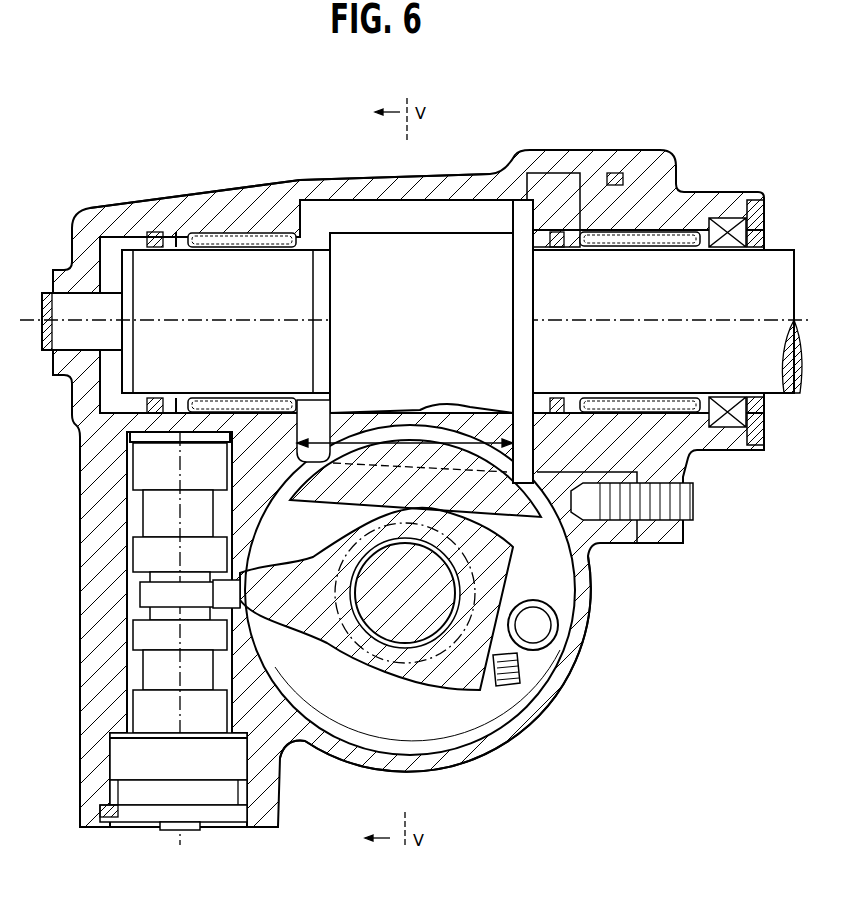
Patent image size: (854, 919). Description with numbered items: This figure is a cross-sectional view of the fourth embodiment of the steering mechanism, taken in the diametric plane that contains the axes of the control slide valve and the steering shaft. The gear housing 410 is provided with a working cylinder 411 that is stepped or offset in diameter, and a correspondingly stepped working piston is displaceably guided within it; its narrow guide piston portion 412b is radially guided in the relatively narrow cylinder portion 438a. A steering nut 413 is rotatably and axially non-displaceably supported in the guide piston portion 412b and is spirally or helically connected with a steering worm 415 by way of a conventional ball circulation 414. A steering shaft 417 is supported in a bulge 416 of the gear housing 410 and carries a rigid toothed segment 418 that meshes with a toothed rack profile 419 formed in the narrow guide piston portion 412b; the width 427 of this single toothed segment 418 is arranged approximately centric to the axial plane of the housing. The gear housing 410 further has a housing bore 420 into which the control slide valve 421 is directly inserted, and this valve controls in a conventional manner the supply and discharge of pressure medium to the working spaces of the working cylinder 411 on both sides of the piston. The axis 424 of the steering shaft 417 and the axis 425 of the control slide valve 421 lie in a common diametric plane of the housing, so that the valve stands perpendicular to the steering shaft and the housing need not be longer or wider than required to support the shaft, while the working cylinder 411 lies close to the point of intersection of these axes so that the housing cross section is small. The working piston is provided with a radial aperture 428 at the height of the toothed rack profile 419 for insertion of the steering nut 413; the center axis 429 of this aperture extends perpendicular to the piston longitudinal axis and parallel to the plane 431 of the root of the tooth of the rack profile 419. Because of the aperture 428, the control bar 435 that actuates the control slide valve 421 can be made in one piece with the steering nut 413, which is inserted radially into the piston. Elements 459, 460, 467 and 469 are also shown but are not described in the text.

The gear housing 410 is at (76, 471).
The working cylinder 411 is at (545, 716).
The narrow guide piston portion 412b is at (367, 740).
The steering nut 413 is at (507, 743).
The ball circulation 414 is at (552, 577).
The steering worm 415 is at (390, 615).
The bulge 416 is at (345, 182).
The steering shaft 417 is at (713, 448).
The toothed segment 418 is at (533, 448).
The toothed rack profile 419 is at (323, 463).
The housing bore 420 is at (128, 437).
The control slide valve 421 is at (148, 590).
The axis of the steering shaft 424 is at (712, 398).
The axis of the control slide valve 425 is at (180, 833).
The width of the toothed segment 427 is at (415, 408).
The radial aperture 428 is at (308, 693).
The center axis of the aperture 429 is at (587, 620).
The plane of the root of the tooth 431 is at (280, 497).
The control bar 435 is at (247, 606).
The narrow cylinder portion 438a is at (447, 757).
The retaining ring 459 is at (113, 757).
The spring seat 460 is at (117, 733).
The seal 467 is at (103, 807).
The shaft seal 469 is at (155, 262).